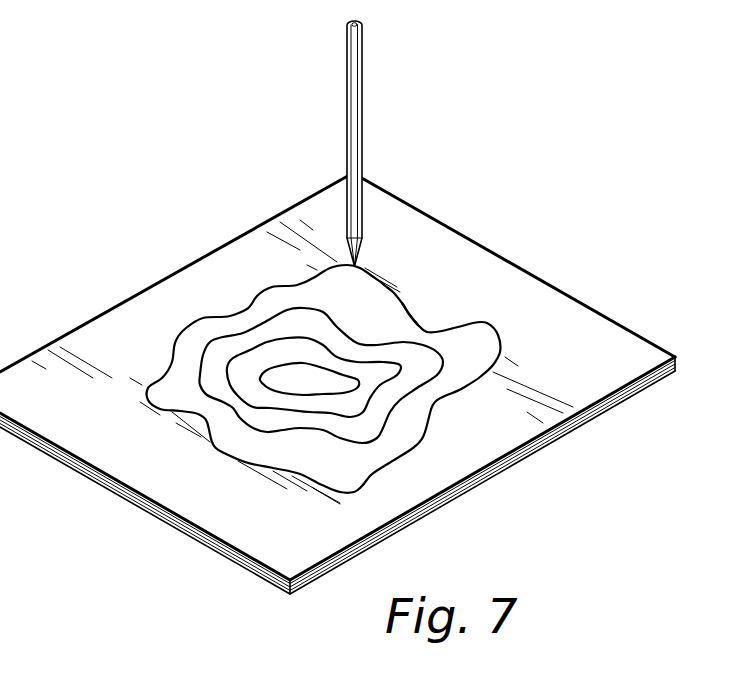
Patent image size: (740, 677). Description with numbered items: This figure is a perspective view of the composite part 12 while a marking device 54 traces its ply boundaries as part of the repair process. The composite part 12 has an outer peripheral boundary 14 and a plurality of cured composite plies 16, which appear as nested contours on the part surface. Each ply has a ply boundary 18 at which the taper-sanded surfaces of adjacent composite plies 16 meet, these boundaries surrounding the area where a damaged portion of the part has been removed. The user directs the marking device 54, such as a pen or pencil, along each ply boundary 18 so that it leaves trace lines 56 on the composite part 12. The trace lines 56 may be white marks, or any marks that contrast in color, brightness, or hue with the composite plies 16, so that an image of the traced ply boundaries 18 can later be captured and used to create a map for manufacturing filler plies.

The composite part 12 is at (187, 485).
The peripheral boundary 14 is at (113, 307).
The cured composite plies 16 is at (247, 323).
The ply boundary 18 is at (410, 398).
The marking device 54 is at (362, 84).
The trace lines 56 is at (407, 311).